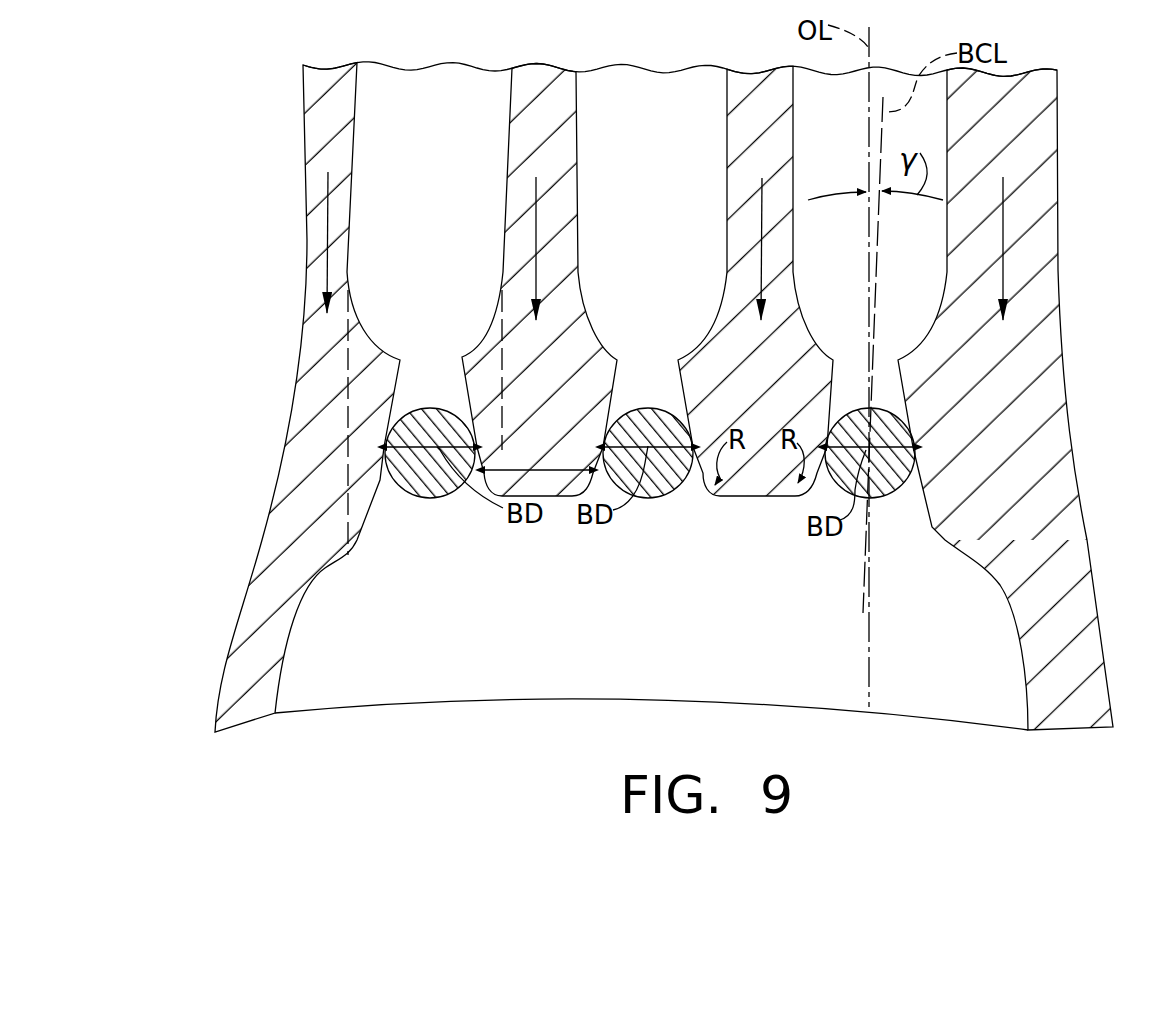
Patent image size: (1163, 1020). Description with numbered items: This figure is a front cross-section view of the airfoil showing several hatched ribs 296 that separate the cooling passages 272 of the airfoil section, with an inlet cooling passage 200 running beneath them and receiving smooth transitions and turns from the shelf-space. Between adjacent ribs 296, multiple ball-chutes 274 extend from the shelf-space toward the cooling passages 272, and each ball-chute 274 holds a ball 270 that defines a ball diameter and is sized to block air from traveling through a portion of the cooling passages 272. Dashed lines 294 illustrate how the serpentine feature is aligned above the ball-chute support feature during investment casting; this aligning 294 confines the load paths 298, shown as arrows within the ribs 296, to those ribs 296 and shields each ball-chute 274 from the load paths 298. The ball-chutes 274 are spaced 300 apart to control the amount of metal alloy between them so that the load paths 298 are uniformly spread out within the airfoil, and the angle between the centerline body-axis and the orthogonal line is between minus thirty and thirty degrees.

The inlet cooling passage 200 is at (662, 683).
The ball 270 is at (400, 417).
The cooling passages 272 is at (423, 83).
The ball-chute 274 is at (642, 385).
The dashed lines (alignment) 294 is at (345, 468).
The ribs 296 is at (532, 90).
The load paths 298 is at (328, 230).
The spacing 300 is at (545, 472).